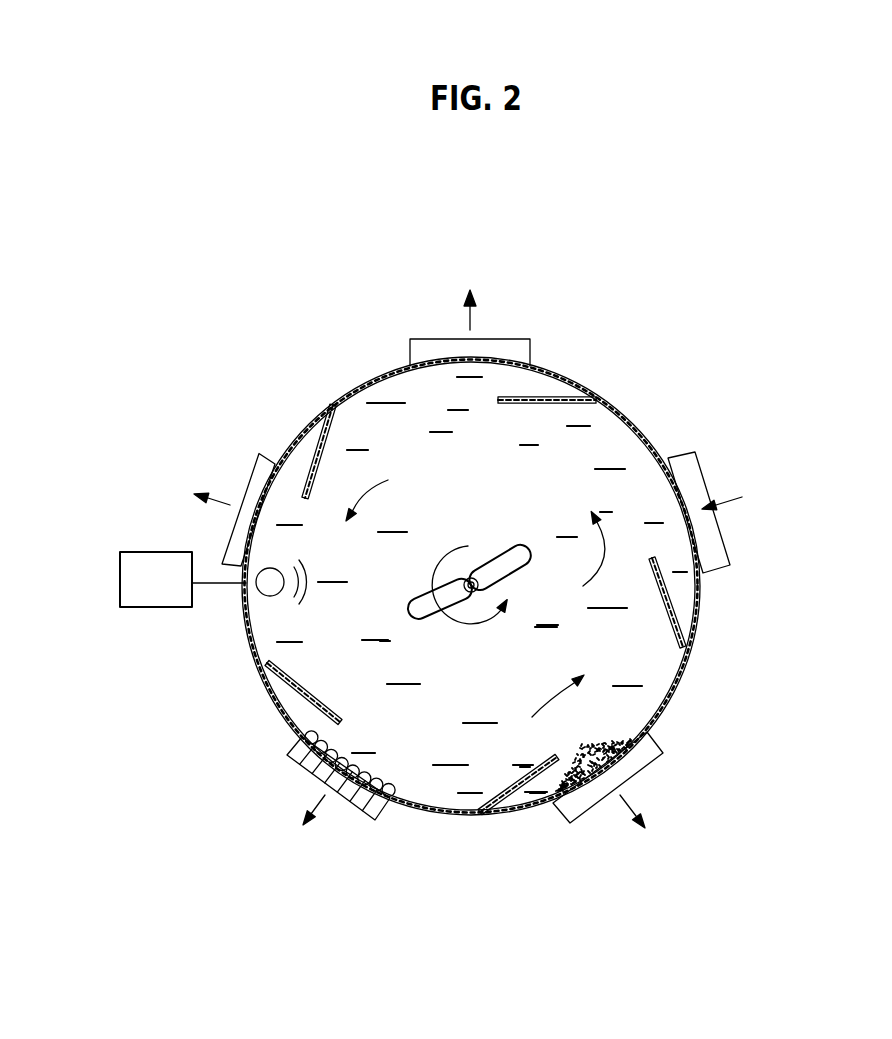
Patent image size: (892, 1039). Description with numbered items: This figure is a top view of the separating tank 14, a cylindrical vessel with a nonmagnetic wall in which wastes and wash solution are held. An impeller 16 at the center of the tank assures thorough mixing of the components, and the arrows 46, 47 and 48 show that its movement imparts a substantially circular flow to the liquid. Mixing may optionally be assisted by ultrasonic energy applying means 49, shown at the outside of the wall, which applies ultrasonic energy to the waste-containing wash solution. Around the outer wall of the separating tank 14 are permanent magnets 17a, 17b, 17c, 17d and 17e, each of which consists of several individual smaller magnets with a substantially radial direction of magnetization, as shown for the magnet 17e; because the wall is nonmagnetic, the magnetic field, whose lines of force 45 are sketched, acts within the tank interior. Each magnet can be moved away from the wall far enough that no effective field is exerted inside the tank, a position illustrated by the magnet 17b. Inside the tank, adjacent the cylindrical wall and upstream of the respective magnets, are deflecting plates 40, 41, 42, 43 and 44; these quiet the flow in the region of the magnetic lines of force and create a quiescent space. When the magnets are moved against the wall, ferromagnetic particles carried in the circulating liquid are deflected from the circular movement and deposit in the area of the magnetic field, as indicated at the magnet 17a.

The separating tank 14 is at (638, 430).
The impeller 16 is at (518, 548).
The permanent magnet 17a is at (660, 742).
The permanent magnet 17b is at (723, 542).
The permanent magnet 17c is at (515, 339).
The permanent magnet 17d is at (254, 467).
The permanent magnet 17e is at (365, 823).
The deflecting plate 40 is at (665, 598).
The deflecting plate 41 is at (563, 397).
The deflecting plate 42 is at (320, 417).
The deflecting plate 43 is at (275, 672).
The deflecting plate 44 is at (511, 797).
The lines of force 45 is at (370, 778).
The arrow 46 is at (388, 480).
The arrow 47 is at (532, 717).
The arrow 48 is at (582, 567).
The ultrasonic energy applying means 49 is at (152, 552).